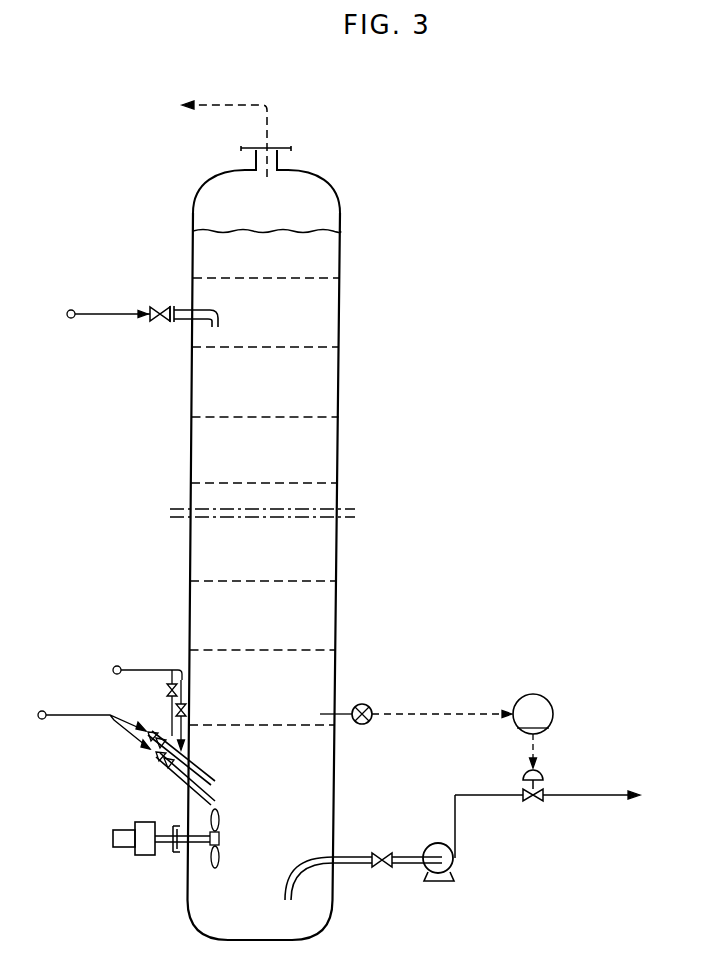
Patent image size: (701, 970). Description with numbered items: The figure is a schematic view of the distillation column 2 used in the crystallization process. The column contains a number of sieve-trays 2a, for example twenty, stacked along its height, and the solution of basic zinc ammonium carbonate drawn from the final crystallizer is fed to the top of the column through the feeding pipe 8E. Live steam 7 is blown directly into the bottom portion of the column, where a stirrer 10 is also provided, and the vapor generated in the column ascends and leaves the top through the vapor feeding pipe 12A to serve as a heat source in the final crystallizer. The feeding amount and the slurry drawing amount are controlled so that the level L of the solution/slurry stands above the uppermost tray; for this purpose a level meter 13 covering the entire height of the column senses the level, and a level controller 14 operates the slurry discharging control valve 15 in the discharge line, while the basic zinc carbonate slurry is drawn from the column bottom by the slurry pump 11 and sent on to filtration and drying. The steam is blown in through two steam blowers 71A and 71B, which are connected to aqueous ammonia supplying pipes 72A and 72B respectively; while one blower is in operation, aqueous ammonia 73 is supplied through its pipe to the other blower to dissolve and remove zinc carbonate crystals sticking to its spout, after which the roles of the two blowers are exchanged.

The distillation column 2 is at (338, 458).
The sieve-trays 2a is at (300, 581).
The liquid level L is at (309, 231).
The vapor feeding pipe 12A is at (236, 104).
The feeding pipe 8E is at (112, 314).
The live steam 7 is at (86, 726).
The steam blower 71A is at (194, 792).
The steam blower 71B is at (177, 770).
The aqueous ammonia supplying pipe 72A is at (172, 722).
The aqueous ammonia supplying pipe 72B is at (183, 677).
The aqueous ammonia 73 is at (132, 672).
The stirrer 10 is at (212, 856).
The level meter 13 is at (362, 704).
The level controller 14 is at (548, 704).
The slurry discharging control valve 15 is at (540, 781).
The slurry pump 11 is at (454, 858).